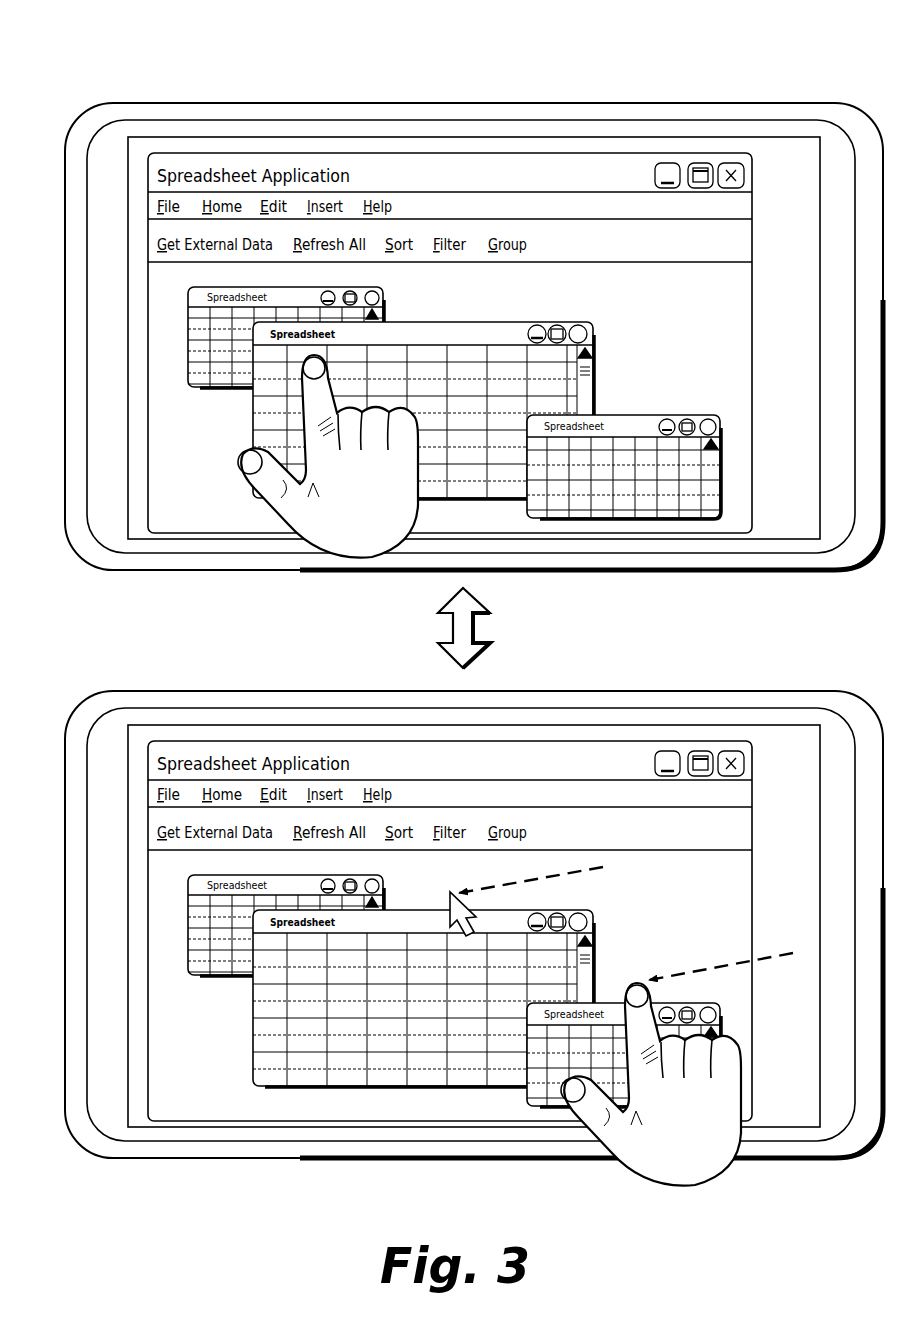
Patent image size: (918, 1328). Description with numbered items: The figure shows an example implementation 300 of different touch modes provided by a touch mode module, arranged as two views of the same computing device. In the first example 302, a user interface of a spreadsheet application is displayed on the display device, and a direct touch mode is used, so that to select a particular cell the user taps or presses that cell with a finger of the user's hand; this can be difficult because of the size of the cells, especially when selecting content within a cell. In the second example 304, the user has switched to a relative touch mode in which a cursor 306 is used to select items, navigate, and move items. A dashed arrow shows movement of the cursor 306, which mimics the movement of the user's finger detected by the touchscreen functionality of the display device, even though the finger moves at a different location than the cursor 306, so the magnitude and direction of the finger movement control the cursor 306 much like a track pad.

The example implementation 300 is at (158, 46).
The first example 302 is at (150, 92).
The second example 304 is at (150, 674).
The cursor 306 is at (451, 890).